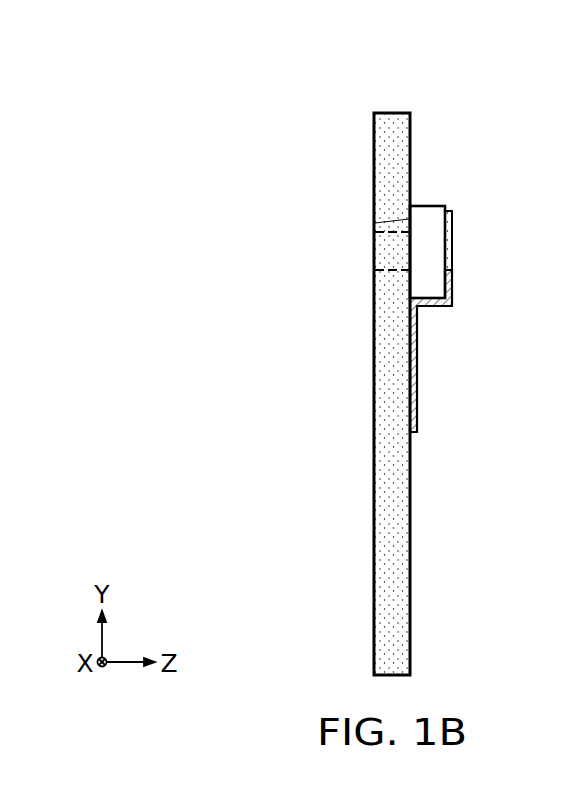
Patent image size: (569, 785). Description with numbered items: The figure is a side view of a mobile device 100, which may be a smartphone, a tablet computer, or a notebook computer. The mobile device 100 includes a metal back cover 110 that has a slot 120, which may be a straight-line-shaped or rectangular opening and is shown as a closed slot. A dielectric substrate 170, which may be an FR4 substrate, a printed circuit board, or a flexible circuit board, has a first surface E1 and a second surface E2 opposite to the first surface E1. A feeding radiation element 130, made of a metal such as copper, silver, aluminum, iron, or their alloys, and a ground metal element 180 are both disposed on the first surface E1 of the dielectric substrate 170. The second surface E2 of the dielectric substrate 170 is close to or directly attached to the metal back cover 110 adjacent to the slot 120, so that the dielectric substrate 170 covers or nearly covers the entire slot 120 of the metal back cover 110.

The mobile device 100 is at (535, 58).
The metal back cover 110 is at (382, 545).
The slot 120 is at (373, 255).
The feeding radiation element 130 is at (453, 250).
The dielectric substrate 170 is at (424, 203).
The ground metal element 180 is at (417, 373).
The first surface E1 is at (453, 215).
The second surface E2 is at (378, 220).